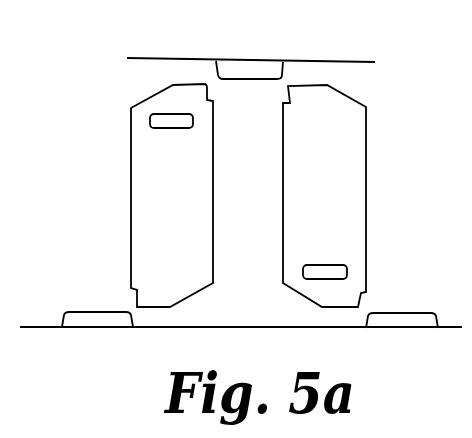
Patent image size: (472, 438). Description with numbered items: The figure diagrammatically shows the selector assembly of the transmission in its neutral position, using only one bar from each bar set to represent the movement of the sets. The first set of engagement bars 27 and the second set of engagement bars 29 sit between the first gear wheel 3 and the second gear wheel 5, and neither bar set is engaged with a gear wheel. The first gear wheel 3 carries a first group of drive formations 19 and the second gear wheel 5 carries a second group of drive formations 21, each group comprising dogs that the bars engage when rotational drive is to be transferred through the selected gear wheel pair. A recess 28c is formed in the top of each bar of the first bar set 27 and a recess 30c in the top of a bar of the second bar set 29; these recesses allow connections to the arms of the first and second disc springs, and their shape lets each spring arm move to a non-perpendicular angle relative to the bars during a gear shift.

The first gear wheel 3 is at (313, 27).
The second gear wheel 5 is at (82, 345).
The first group of drive formations 19 is at (224, 72).
The second group of drive formations 21 is at (77, 318).
The first set of engagement bars 27 is at (357, 170).
The recess 28c is at (346, 264).
The second set of engagement bars 29 is at (145, 212).
The recess 30c is at (150, 120).